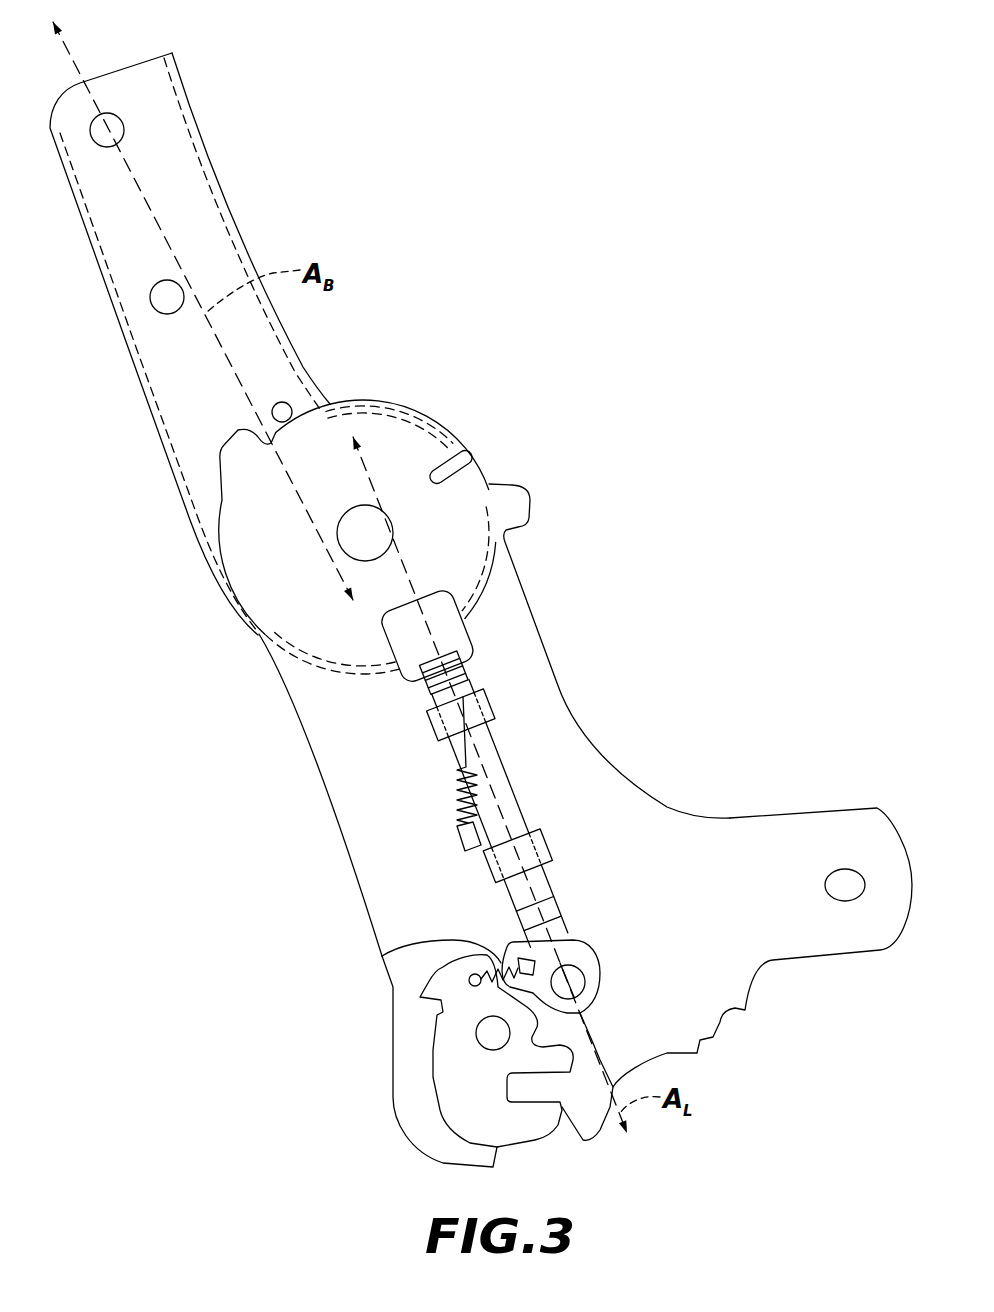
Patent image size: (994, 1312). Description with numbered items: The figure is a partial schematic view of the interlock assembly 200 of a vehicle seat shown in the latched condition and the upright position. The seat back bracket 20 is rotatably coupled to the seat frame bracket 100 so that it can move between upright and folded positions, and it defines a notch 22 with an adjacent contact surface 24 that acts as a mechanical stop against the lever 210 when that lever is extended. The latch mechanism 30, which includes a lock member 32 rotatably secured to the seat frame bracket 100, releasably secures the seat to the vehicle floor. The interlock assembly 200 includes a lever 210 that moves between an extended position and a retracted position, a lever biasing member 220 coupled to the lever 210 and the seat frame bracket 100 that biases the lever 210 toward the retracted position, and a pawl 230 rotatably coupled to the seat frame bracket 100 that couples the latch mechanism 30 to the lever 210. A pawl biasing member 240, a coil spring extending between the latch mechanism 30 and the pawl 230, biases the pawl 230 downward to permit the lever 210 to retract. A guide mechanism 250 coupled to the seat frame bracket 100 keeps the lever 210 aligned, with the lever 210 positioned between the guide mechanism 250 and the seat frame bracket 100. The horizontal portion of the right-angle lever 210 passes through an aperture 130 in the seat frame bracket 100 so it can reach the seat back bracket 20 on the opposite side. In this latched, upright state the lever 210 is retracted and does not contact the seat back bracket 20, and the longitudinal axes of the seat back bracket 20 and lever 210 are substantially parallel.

The seat back bracket 20 is at (160, 362).
The notch 22 is at (451, 456).
The contact surface 24 is at (467, 462).
The latch mechanism 30 is at (560, 1154).
The lock member 32 is at (463, 1107).
The seat frame bracket 100 is at (345, 748).
The aperture 130 is at (400, 684).
The interlock assembly 200 is at (418, 848).
The lever 210 is at (500, 777).
The lever biasing member 220 is at (460, 785).
The pawl 230 is at (600, 967).
The pawl biasing member 240 is at (382, 956).
The guide mechanism 250 is at (493, 707).